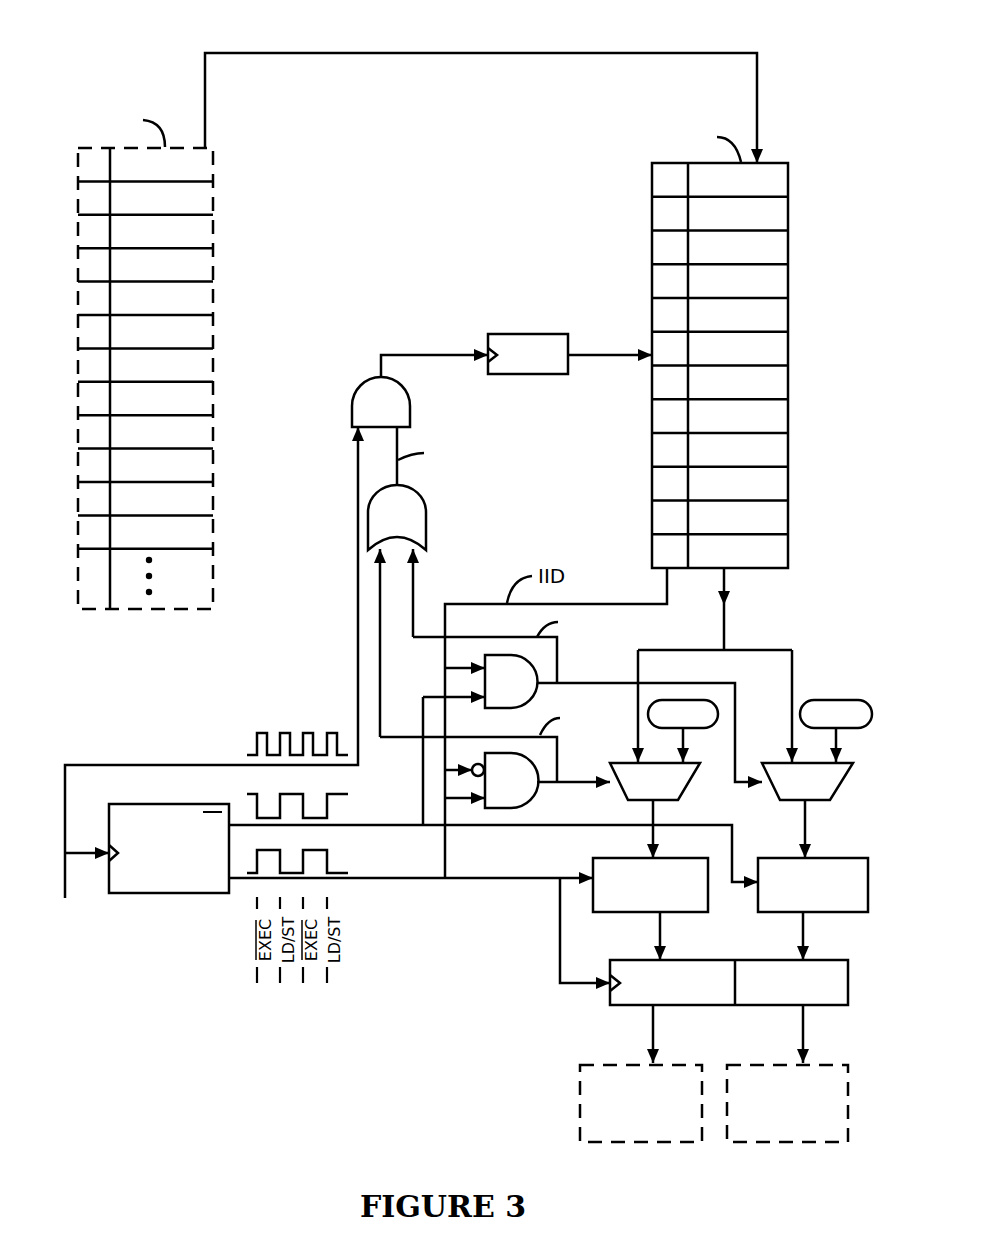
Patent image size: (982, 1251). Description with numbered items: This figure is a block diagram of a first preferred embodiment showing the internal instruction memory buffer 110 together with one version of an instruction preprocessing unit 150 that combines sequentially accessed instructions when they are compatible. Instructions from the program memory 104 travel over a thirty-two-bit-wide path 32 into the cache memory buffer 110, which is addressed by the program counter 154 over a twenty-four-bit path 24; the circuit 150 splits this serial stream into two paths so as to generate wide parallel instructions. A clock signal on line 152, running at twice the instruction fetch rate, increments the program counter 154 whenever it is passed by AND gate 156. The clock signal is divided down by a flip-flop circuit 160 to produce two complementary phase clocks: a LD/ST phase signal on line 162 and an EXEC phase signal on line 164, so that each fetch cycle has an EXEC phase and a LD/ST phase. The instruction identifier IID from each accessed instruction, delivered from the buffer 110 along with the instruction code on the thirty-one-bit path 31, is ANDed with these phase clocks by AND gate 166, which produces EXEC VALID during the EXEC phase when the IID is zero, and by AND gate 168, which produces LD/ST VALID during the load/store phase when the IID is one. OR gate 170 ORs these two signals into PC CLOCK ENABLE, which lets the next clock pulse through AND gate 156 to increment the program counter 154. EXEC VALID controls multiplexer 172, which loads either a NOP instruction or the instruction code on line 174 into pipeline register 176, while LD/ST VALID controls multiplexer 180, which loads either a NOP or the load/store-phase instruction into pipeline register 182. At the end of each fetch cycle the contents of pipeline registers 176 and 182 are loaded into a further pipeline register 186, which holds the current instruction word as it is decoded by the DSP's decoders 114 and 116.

The program memory 104 is at (130, 314).
The 32-bit instruction bus 32 is at (481, 95).
The internal instruction memory buffer 110 is at (739, 334).
The program counter 154 is at (474, 335).
The 24-bit address bus 24 is at (610, 342).
The AND gate 156 is at (381, 431).
The OR gate 170 is at (462, 605).
The AND gate 168 is at (592, 719).
The AND gate 166 is at (534, 758).
The 31-bit instruction bus 31 is at (740, 609).
The line 174 is at (728, 688).
The multiplexer 172 is at (667, 779).
The multiplexer 180 is at (819, 779).
The pipeline register 176 is at (633, 896).
The pipeline register 182 is at (823, 895).
The pipeline register 186 is at (729, 991).
The instruction decoder 114 is at (623, 1084).
The instruction decoder 116 is at (775, 1084).
The instruction preprocessing unit 150 is at (118, 1059).
The line 152 is at (196, 678).
The flip-flop circuit 160 is at (169, 832).
The line 162 is at (493, 833).
The line 164 is at (419, 912).